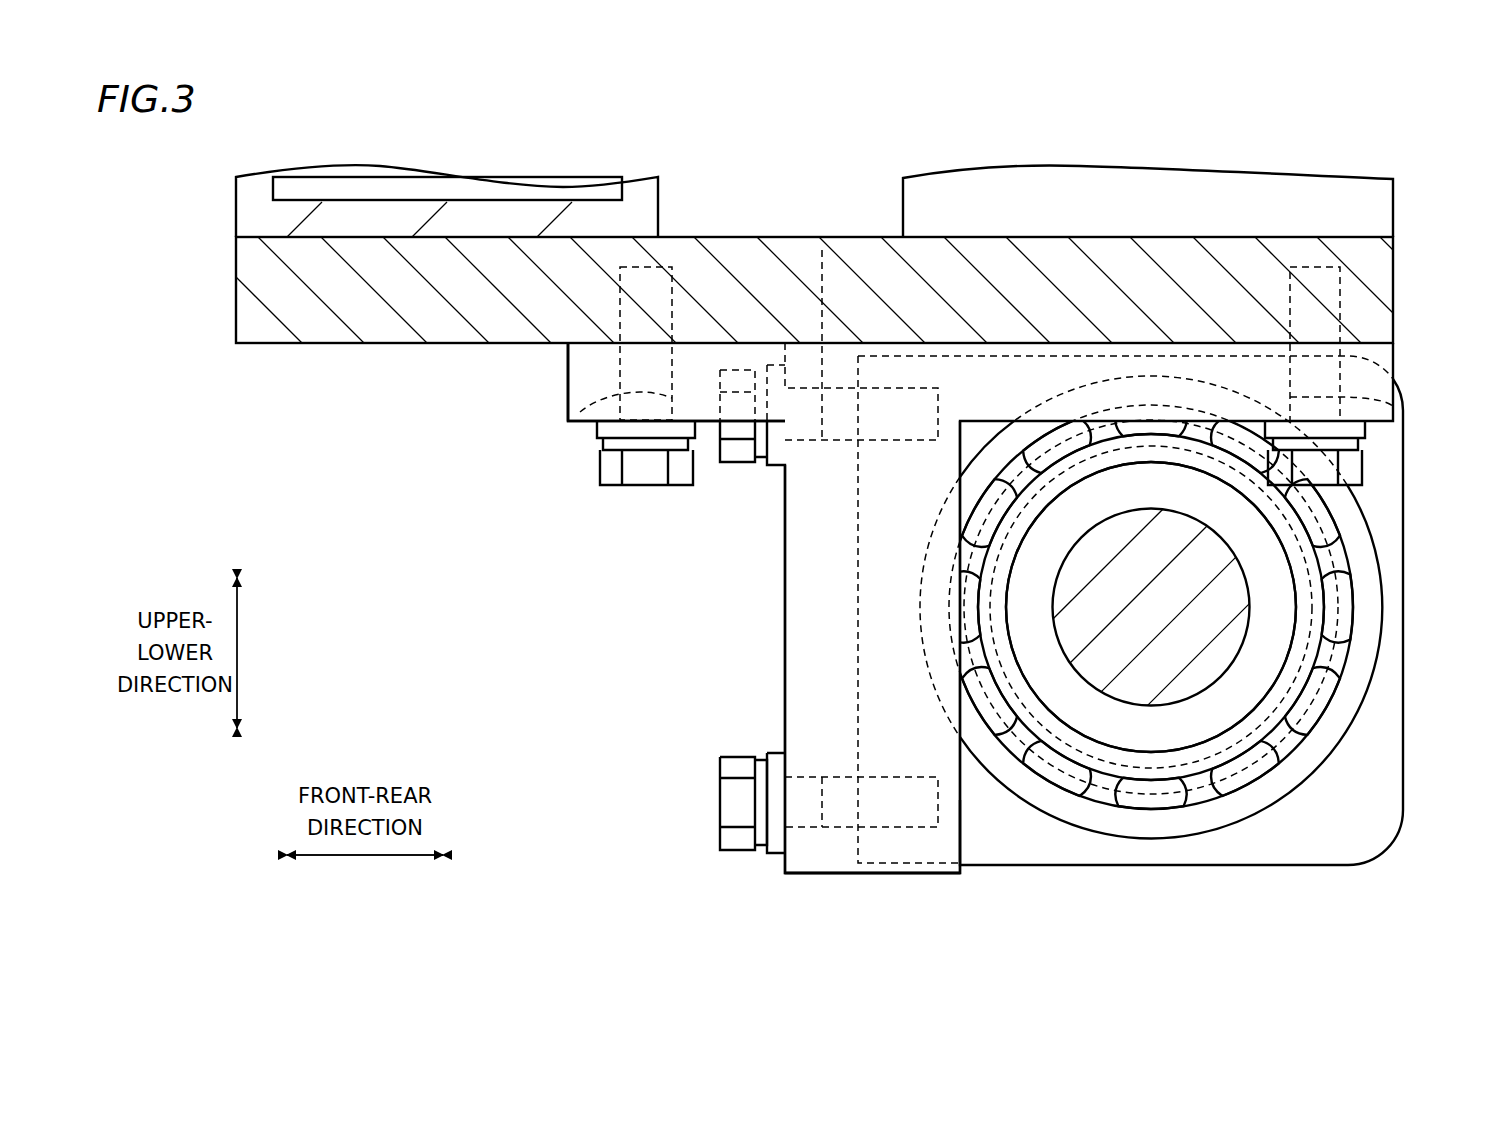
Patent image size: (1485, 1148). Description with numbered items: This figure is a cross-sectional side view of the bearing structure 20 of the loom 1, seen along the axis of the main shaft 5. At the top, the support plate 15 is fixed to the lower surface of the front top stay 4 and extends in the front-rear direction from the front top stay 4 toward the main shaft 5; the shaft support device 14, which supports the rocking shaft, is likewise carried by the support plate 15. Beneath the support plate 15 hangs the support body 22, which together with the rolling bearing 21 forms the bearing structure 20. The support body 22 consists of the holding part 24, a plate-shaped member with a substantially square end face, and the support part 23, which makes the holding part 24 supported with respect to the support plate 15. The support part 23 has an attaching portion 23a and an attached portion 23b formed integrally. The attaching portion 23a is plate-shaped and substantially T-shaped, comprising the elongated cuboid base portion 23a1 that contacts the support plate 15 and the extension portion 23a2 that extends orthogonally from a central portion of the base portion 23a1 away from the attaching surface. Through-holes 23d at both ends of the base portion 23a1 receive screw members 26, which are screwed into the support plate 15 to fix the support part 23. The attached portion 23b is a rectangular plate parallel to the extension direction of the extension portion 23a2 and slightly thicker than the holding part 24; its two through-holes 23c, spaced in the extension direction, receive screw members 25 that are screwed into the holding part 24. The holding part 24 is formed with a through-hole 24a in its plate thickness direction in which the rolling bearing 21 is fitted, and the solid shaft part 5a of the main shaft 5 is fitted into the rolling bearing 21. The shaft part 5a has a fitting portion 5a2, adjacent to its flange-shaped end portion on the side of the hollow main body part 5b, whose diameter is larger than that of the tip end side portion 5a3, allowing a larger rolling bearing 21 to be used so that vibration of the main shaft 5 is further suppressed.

The loom 1 is at (184, 182).
The front top stay 4 is at (656, 212).
The shaft support device 14 is at (912, 211).
The support plate 15 is at (323, 344).
The bearing structure 20 is at (462, 684).
The rolling bearing 21 is at (1320, 774).
The support body 22 is at (706, 892).
The support part 23 is at (800, 565).
The attaching portion 23a is at (562, 403).
The base portion 23a1 is at (578, 365).
The extension portion 23a2 is at (962, 837).
The attached portion 23b is at (880, 873).
The through-hole 23c is at (822, 250).
The through-hole 23d is at (583, 412).
The holding part 24 is at (1318, 857).
The through-hole 24a is at (1170, 841).
The screw member 25 is at (738, 455).
The screw member 26 is at (640, 487).
The main shaft 5 is at (1083, 808).
The shaft part 5a is at (1276, 697).
The fitting portion 5a2 is at (1003, 608).
The tip end side portion 5a3 is at (1252, 602).
The main body part 5b is at (1207, 787).